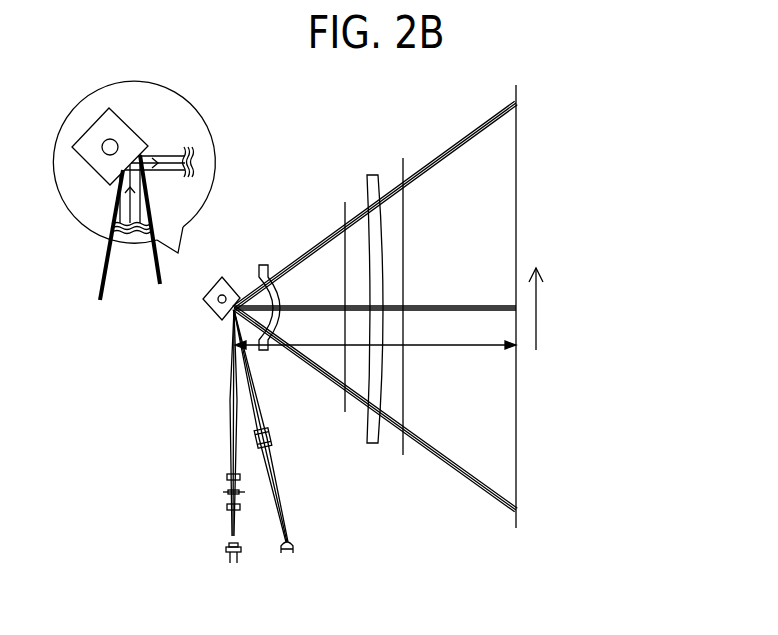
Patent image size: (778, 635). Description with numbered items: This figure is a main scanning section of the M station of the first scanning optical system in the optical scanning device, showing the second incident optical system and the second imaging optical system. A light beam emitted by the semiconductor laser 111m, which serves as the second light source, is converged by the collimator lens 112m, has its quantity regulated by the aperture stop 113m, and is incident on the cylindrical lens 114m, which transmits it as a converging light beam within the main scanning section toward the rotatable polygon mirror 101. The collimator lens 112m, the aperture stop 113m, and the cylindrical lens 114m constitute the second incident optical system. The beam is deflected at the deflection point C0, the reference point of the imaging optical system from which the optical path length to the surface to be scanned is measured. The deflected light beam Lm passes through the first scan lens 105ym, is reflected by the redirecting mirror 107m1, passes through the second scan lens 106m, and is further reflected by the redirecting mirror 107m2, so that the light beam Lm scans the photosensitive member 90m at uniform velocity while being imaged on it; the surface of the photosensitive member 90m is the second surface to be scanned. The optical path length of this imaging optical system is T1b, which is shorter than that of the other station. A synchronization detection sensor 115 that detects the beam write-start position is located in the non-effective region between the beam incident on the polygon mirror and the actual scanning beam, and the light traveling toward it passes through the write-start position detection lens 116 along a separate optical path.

The deflection point C0 is at (129, 162).
The rotatable polygon mirror 101 is at (210, 305).
The first scan lens 105ym is at (263, 265).
The second scan lens 106m is at (370, 175).
The redirecting mirror 107m1 is at (345, 203).
The redirecting mirror 107m2 is at (403, 158).
The light beam Lm is at (468, 305).
The optical path length T1b is at (375, 333).
The photosensitive member 90m is at (516, 527).
The semiconductor laser 111m is at (228, 549).
The collimator lens 112m is at (227, 507).
The aperture stop 113m is at (223, 492).
The cylindrical lens 114m is at (227, 476).
The synchronization detection sensor 115 is at (296, 545).
The write-start position detection lens 116 is at (272, 440).